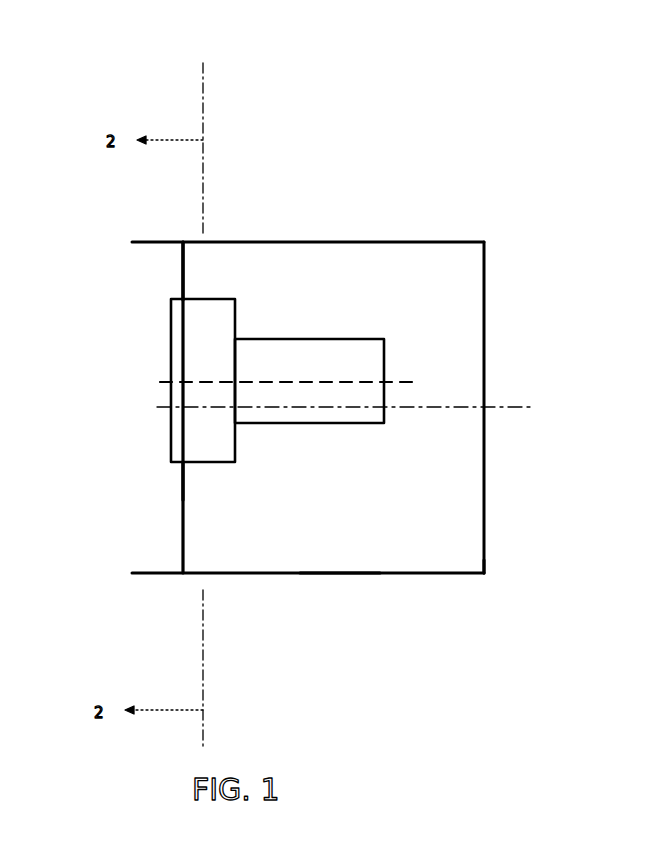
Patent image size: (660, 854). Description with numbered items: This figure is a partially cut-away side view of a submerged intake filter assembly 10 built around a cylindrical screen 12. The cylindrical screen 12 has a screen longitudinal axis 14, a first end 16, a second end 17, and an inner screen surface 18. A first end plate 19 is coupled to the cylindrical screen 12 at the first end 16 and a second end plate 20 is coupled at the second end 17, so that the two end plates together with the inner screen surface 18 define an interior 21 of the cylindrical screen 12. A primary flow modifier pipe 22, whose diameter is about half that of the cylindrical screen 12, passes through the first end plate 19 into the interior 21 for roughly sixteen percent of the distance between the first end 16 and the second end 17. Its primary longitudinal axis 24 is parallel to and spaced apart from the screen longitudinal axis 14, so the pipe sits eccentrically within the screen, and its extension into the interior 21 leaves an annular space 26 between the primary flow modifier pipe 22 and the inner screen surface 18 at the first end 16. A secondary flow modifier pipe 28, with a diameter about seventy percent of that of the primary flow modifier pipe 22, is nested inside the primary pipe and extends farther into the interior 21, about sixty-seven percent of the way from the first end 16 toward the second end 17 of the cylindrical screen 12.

The submerged intake filter assembly 10 is at (254, 131).
The cylindrical screen 12 is at (357, 241).
The screen longitudinal axis 14 is at (535, 407).
The first end 16 is at (183, 576).
The second end 17 is at (484, 577).
The inner screen surface 18 is at (403, 568).
The first end plate 19 is at (181, 486).
The second end plate 20 is at (486, 487).
The interior 21 is at (331, 529).
The primary flow modifier pipe 22 is at (230, 465).
The primary longitudinal axis 24 is at (410, 381).
The annular space 26 is at (185, 268).
The secondary flow modifier pipe 28 is at (365, 425).